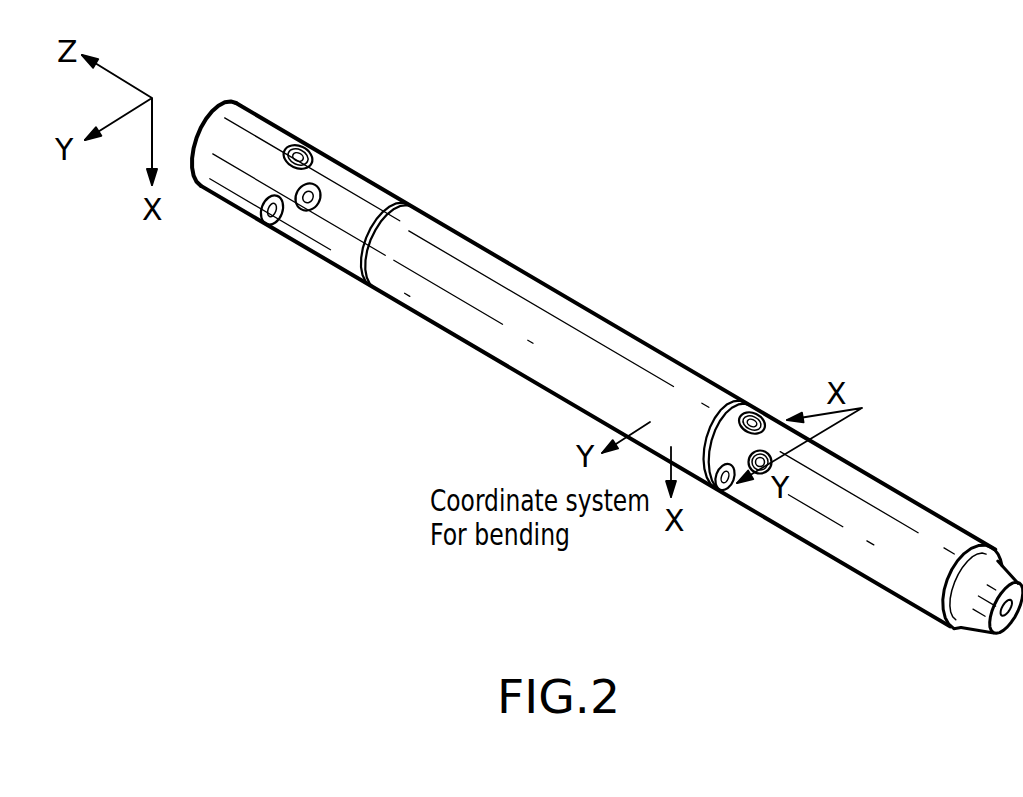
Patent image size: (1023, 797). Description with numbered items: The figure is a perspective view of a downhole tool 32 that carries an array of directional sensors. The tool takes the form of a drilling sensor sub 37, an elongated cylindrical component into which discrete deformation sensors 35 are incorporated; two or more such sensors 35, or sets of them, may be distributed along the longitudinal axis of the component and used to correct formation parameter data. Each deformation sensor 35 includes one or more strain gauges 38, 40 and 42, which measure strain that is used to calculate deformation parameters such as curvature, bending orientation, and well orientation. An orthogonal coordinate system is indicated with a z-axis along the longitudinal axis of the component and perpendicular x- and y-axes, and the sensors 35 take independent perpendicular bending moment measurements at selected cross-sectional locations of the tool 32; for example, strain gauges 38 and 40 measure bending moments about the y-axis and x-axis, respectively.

The tool 32 is at (416, 184).
The deformation sensors 35 is at (295, 177).
The drilling sensor sub 37 is at (533, 278).
The strain gauge 38 is at (758, 408).
The strain gauge 40 is at (720, 489).
The strain gauge 42 is at (762, 478).